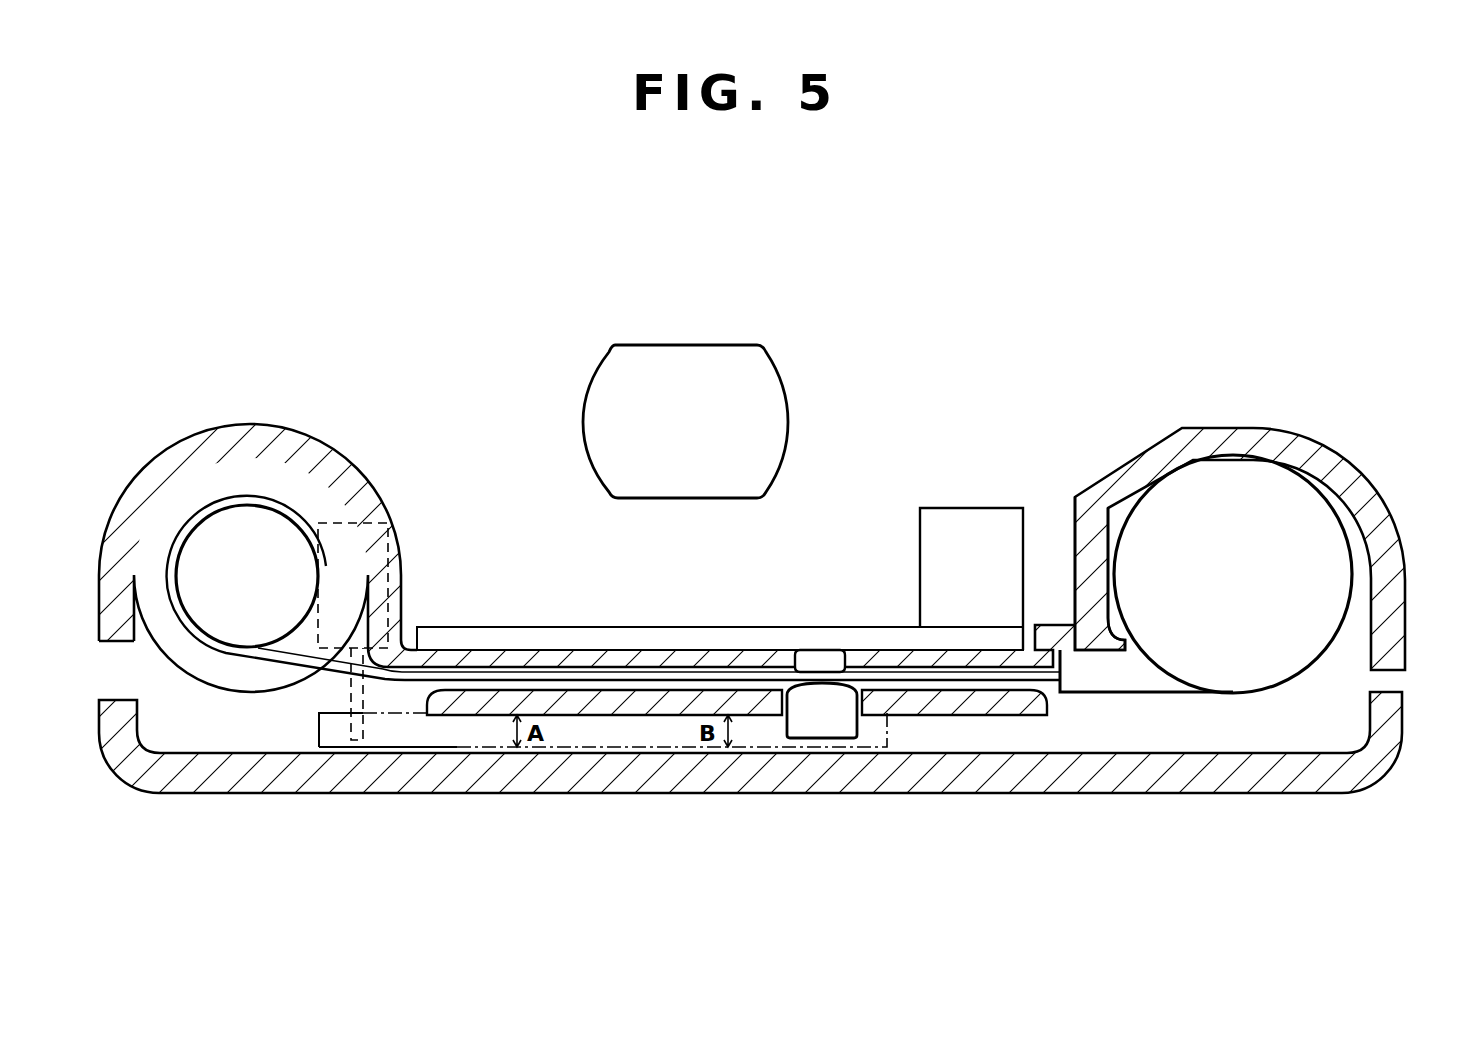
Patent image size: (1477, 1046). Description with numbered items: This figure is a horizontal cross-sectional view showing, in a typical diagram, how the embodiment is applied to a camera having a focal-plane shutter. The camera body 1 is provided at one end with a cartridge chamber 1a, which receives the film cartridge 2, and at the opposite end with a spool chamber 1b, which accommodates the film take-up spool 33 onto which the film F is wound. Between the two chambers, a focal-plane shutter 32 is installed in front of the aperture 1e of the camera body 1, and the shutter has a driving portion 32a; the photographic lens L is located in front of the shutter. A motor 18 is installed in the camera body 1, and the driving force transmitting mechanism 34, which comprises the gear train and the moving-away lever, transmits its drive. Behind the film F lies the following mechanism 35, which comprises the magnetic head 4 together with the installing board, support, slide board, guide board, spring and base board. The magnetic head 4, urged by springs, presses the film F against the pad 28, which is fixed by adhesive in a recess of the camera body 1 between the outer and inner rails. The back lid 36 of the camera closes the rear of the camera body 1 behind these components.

The camera body 1 is at (1088, 507).
The cartridge chamber 1a is at (1350, 633).
The spool chamber 1b is at (275, 478).
The aperture 1e is at (597, 648).
The film cartridge 2 is at (1290, 523).
The magnetic head 4 is at (842, 703).
The motor 18 is at (353, 560).
The pad 28 is at (825, 647).
The focal-plane shutter 32 is at (730, 633).
The driving portion 32a is at (958, 543).
The film take-up spool 33 is at (273, 553).
The driving force transmitting mechanism 34 is at (452, 730).
The following mechanism 35 is at (745, 735).
The back lid 36 is at (1095, 780).
The film F is at (437, 677).
The photographic lens L is at (755, 420).